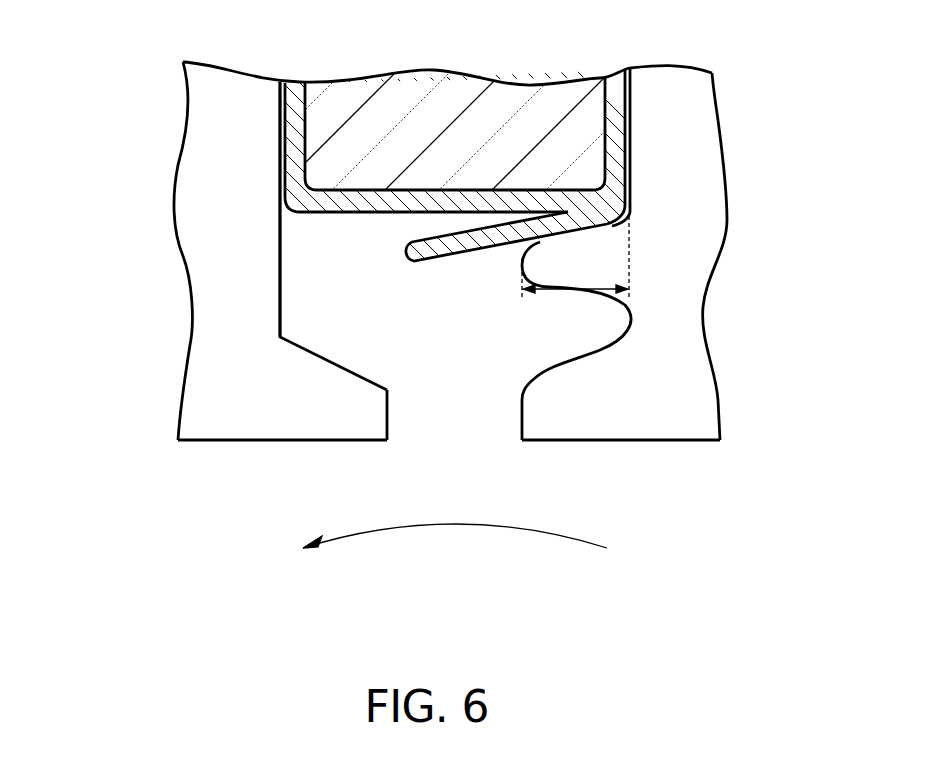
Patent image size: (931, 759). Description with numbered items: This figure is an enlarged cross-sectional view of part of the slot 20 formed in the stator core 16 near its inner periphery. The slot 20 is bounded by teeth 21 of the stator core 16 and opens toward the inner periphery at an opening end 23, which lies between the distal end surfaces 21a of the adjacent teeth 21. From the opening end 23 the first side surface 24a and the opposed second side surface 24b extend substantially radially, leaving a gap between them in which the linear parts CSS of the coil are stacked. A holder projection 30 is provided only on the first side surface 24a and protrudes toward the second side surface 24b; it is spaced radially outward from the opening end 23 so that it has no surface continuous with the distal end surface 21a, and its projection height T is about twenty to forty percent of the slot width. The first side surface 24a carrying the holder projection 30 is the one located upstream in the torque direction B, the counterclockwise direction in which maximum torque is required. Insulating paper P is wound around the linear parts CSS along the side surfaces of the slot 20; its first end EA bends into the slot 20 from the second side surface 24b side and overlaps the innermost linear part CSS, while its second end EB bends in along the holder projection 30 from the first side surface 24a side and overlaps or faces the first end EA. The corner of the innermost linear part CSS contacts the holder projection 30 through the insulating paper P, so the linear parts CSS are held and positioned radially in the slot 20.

The stator core 16 is at (698, 105).
The slot 20 is at (430, 179).
The teeth 21 is at (454, 278).
The distal end surface of the teeth 21a is at (255, 442).
The opening end 23 is at (455, 414).
The first side surface 24a is at (600, 148).
The second side surface 24b is at (282, 281).
The holder projection 30 is at (537, 258).
The insulating paper P is at (290, 122).
The linear parts CSS is at (467, 92).
The first end of the insulating paper EA is at (387, 198).
The second end of the insulating paper EB is at (452, 246).
The projection height T is at (578, 290).
The torque direction B is at (452, 530).